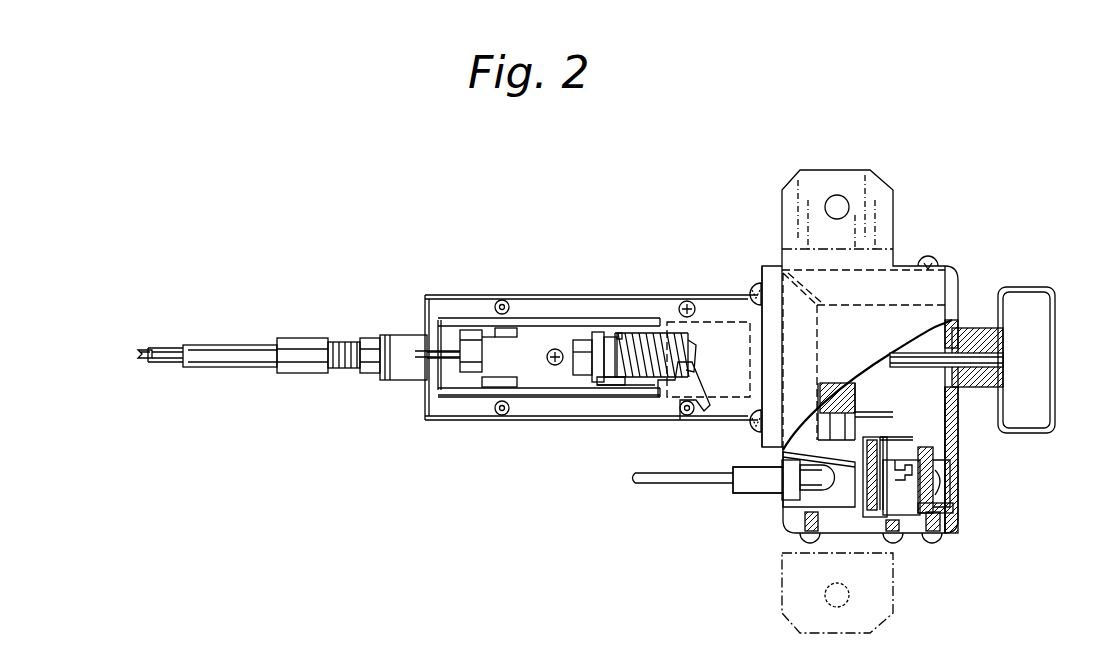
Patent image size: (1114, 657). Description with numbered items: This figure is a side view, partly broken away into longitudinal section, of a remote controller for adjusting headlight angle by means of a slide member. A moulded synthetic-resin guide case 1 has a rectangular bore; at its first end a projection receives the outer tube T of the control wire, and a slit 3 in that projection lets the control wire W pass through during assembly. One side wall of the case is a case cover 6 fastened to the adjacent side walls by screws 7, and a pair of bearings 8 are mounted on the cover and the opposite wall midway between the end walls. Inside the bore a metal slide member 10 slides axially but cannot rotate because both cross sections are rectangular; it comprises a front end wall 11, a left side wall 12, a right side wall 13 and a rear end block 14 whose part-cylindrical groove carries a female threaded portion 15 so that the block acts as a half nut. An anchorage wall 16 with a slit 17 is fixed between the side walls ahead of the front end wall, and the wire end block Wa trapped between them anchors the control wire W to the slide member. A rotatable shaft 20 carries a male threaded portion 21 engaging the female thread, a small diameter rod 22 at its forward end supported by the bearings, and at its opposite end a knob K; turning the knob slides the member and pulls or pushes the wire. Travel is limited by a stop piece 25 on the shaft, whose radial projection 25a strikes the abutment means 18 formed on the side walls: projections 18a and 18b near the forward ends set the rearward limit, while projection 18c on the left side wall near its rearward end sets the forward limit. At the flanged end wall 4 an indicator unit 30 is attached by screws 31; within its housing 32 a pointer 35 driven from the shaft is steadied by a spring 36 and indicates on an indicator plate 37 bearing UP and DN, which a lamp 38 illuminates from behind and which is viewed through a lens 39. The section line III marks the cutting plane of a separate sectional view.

The guide case 1 is at (453, 283).
The slit 3 is at (392, 350).
The flanged end wall 4 is at (770, 348).
The case cover 6 is at (712, 307).
The screws 7 is at (508, 300).
The bearings 8 is at (587, 337).
The slide member 10 is at (549, 345).
The front end wall 11 is at (485, 373).
The left side wall 12 is at (558, 390).
The right side wall 13 is at (553, 323).
The rear end block 14 is at (643, 327).
The female threaded portion 15 is at (613, 388).
The anchorage wall 16 is at (447, 338).
The slit 17 is at (437, 425).
The abutment means 18 is at (539, 348).
The projection 18a is at (502, 388).
The projection 18b is at (497, 330).
The projection 18c is at (613, 386).
The rotatable shaft 20 is at (677, 383).
The male threaded portion 21 is at (673, 346).
The small diameter rod 22 is at (573, 364).
The stop piece 25 is at (605, 345).
The nut projection 25a is at (625, 333).
The indicator unit 30 is at (970, 284).
The screws 31 is at (752, 283).
The housing 32 is at (960, 410).
The pointer 35 is at (887, 450).
The spring 36 is at (858, 400).
The indicator plate 37 is at (903, 507).
The lamp 38 is at (830, 475).
The lens 39 is at (950, 470).
The control wire W is at (143, 343).
The wire end block Wa is at (467, 337).
The outer tube T is at (245, 343).
The knob K is at (1045, 342).
The section line III is at (126, 353).